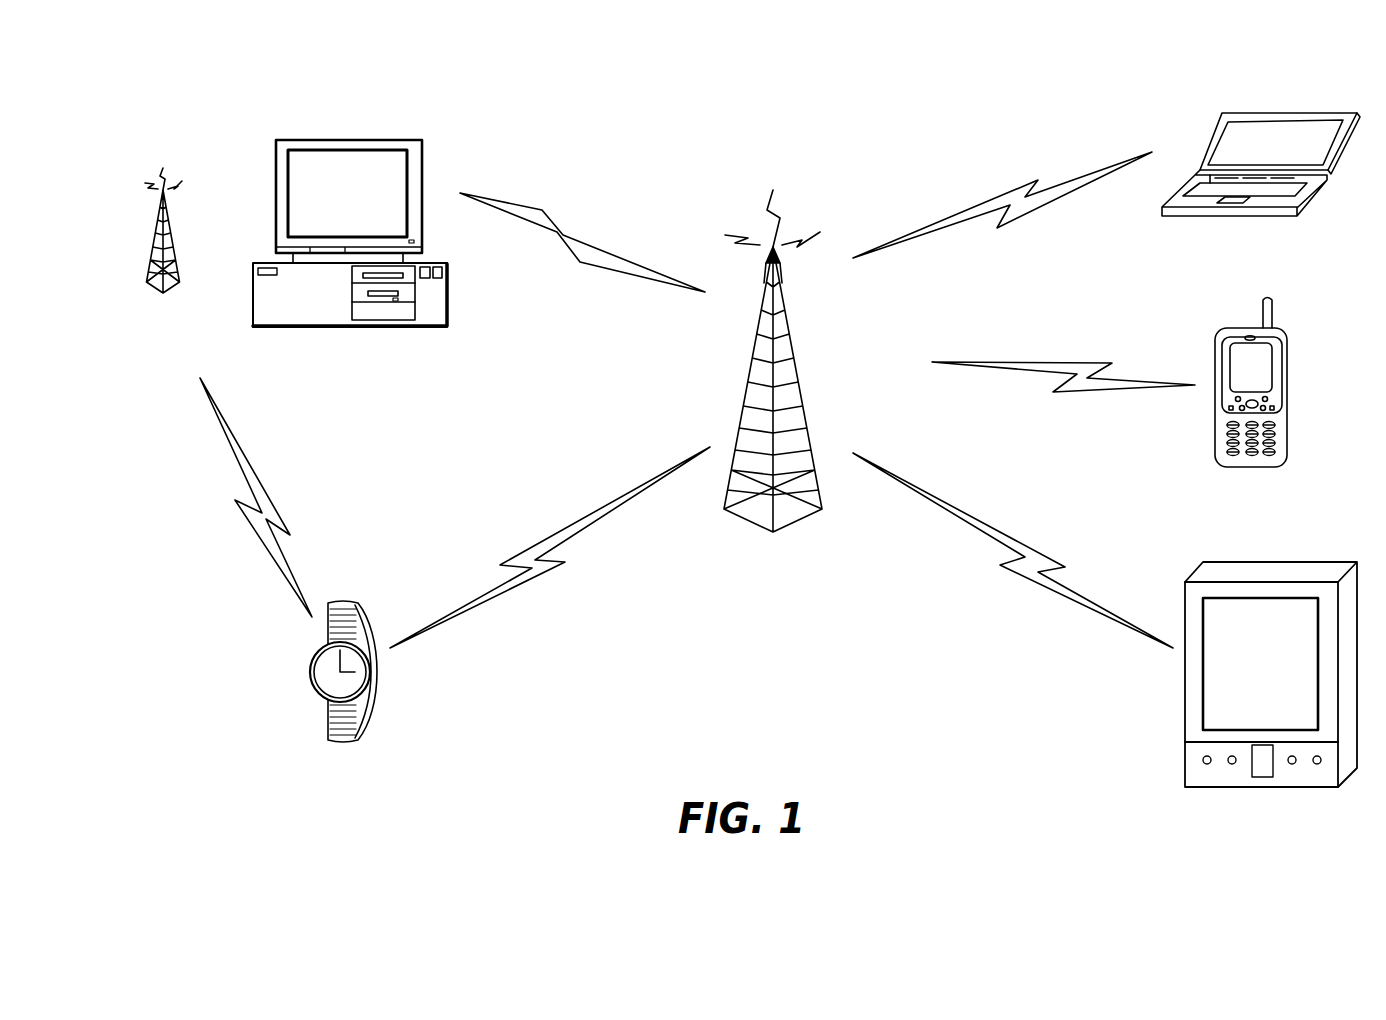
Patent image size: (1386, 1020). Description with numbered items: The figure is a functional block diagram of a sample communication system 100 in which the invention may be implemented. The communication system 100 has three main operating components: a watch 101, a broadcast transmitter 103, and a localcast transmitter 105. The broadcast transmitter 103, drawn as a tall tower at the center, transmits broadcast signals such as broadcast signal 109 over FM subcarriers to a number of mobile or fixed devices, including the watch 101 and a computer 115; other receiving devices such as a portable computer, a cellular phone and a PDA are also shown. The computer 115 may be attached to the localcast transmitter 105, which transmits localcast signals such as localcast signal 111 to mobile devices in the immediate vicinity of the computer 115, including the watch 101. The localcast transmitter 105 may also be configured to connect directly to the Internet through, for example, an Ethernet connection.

The communication system 100 is at (925, 131).
The watch 101 is at (376, 661).
The broadcast transmitter 103 is at (806, 418).
The localcast transmitter 105 is at (173, 236).
The broadcast signal 109 is at (535, 522).
The localcast signal 111 is at (294, 504).
The computer 115 is at (362, 140).